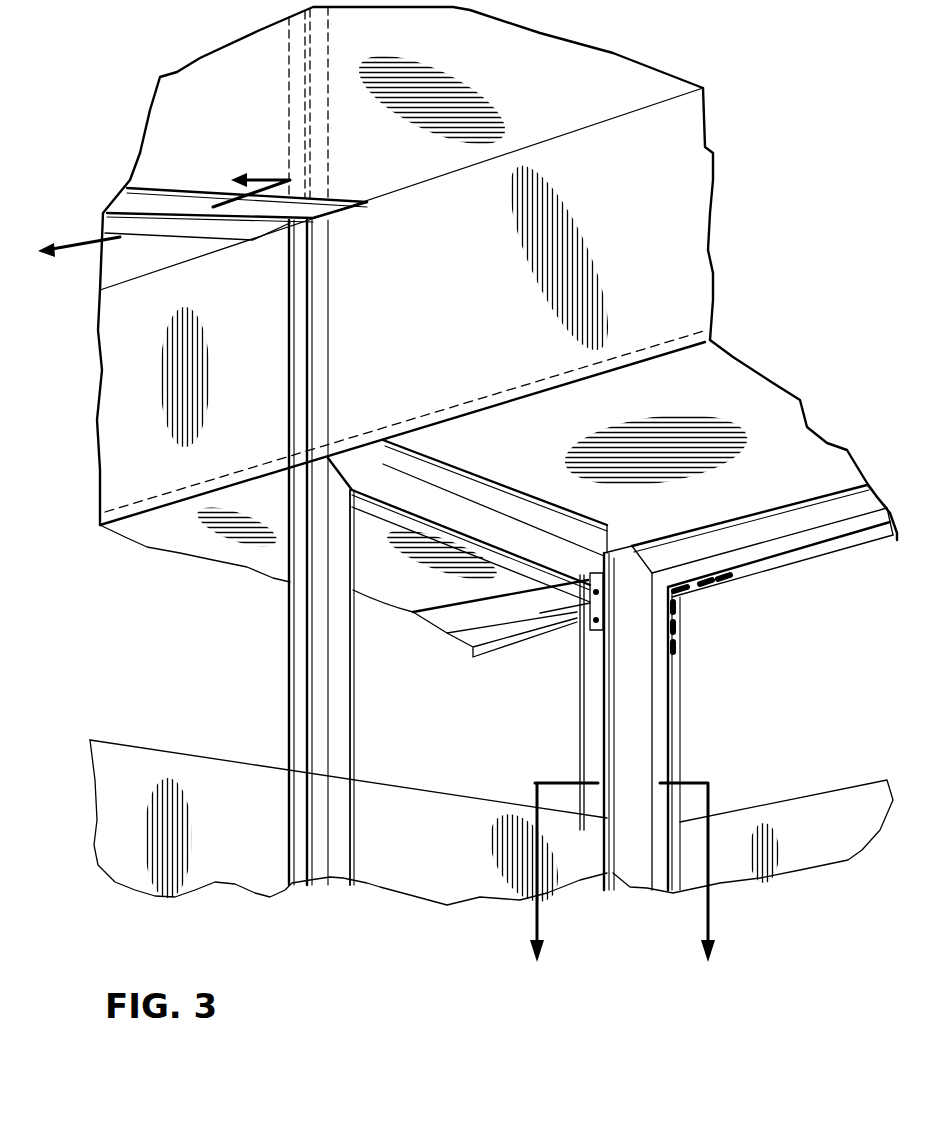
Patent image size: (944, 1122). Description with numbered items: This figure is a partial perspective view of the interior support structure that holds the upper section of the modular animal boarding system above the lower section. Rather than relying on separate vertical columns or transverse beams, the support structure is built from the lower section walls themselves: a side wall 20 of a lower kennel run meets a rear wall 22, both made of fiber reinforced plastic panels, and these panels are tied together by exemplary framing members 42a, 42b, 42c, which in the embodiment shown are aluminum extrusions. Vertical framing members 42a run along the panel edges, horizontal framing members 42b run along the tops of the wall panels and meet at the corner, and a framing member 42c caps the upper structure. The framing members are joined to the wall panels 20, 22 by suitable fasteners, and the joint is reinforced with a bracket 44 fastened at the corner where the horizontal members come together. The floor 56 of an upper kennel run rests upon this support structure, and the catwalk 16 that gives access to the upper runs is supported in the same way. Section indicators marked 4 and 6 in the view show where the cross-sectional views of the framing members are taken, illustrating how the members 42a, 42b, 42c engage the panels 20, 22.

The catwalk 16 is at (521, 453).
The side wall 20 is at (262, 849).
The rear wall 22 is at (844, 829).
The floor 56 is at (392, 171).
The framing member 42a is at (355, 673).
The framing member 42b is at (607, 524).
The framing member 42c is at (175, 187).
The bracket 44 is at (548, 627).
The section line 4- 4 is at (617, 873).
The section line 6- 6 is at (164, 218).